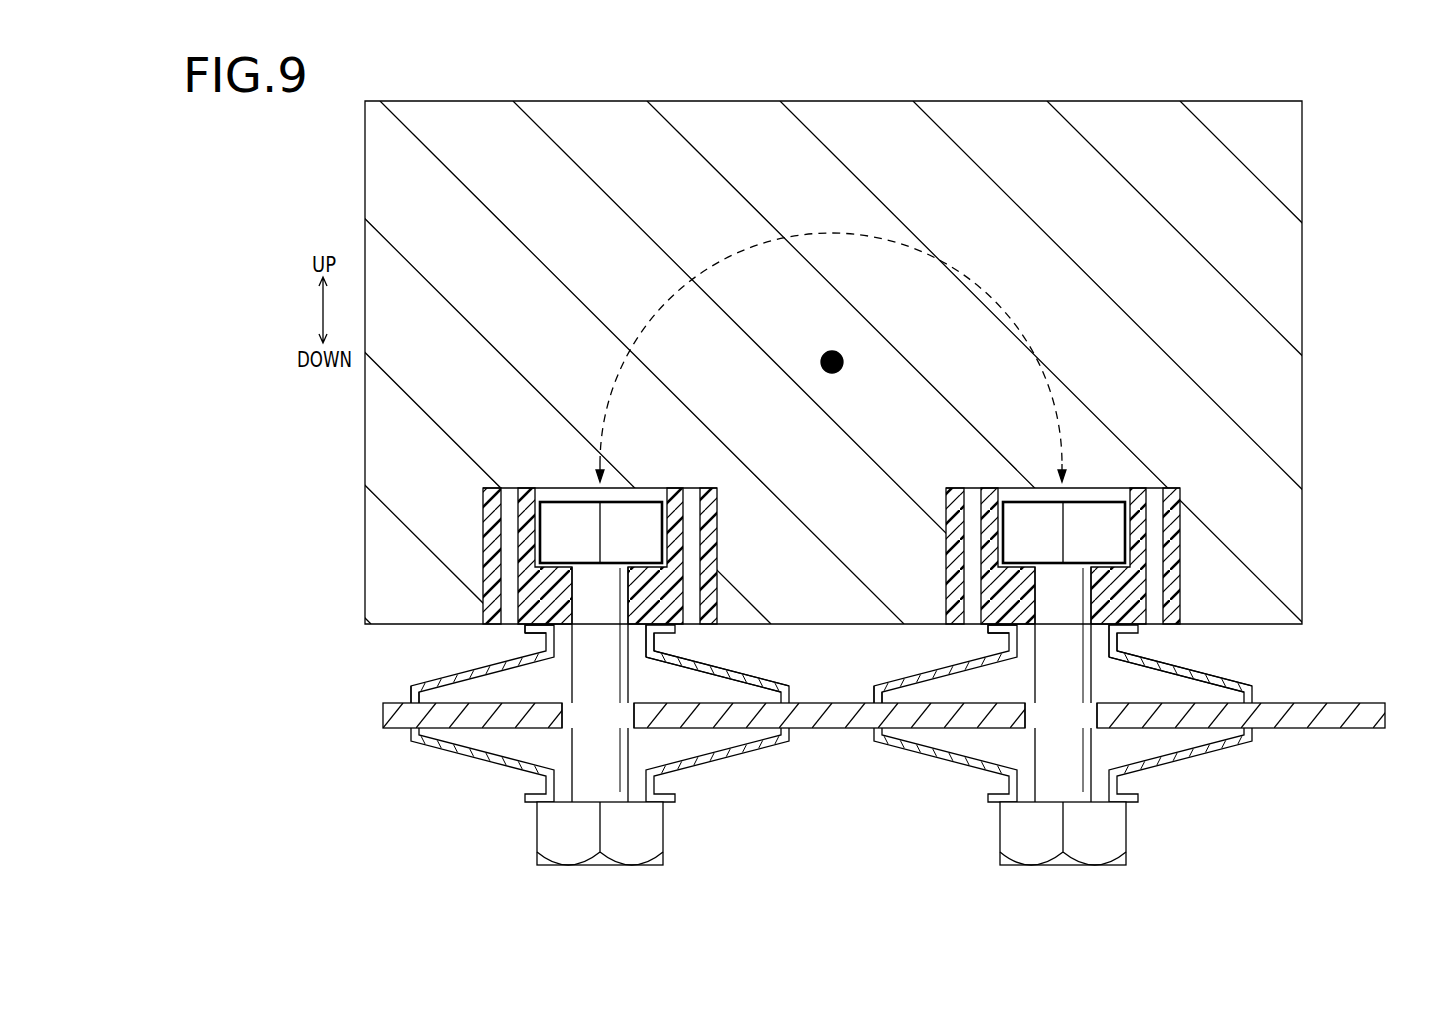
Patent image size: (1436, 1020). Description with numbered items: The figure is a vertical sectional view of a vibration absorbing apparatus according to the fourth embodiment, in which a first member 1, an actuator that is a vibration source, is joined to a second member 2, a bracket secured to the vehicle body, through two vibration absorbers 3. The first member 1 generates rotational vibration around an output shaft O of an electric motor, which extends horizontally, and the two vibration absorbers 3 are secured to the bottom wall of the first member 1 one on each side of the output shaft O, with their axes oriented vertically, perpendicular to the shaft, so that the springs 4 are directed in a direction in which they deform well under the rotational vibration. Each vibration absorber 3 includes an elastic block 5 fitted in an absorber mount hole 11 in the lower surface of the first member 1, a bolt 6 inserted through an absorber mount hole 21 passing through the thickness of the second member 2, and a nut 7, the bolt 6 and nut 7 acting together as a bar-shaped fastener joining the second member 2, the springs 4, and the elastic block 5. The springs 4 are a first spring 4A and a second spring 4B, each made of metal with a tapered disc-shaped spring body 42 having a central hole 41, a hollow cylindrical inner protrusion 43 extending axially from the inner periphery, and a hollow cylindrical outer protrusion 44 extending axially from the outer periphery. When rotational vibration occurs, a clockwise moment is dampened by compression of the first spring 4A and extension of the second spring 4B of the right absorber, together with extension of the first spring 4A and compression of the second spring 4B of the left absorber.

The first member 1 is at (1268, 260).
The output shaft O is at (843, 362).
The second member 2 is at (1352, 702).
The vibration absorber 3 is at (441, 771).
The spring 4 is at (813, 719).
The first spring 4A is at (470, 670).
The second spring 4B is at (513, 775).
The elastic block 5 is at (535, 585).
The bolt 6 is at (548, 835).
The nut 7 is at (558, 515).
The absorber mount hole 11 is at (483, 548).
The absorber mount hole 21 is at (637, 725).
The central hole 41 is at (646, 668).
The spring body 42 is at (733, 674).
The inner protrusion 43 is at (548, 634).
The outer protrusion 44 is at (412, 692).